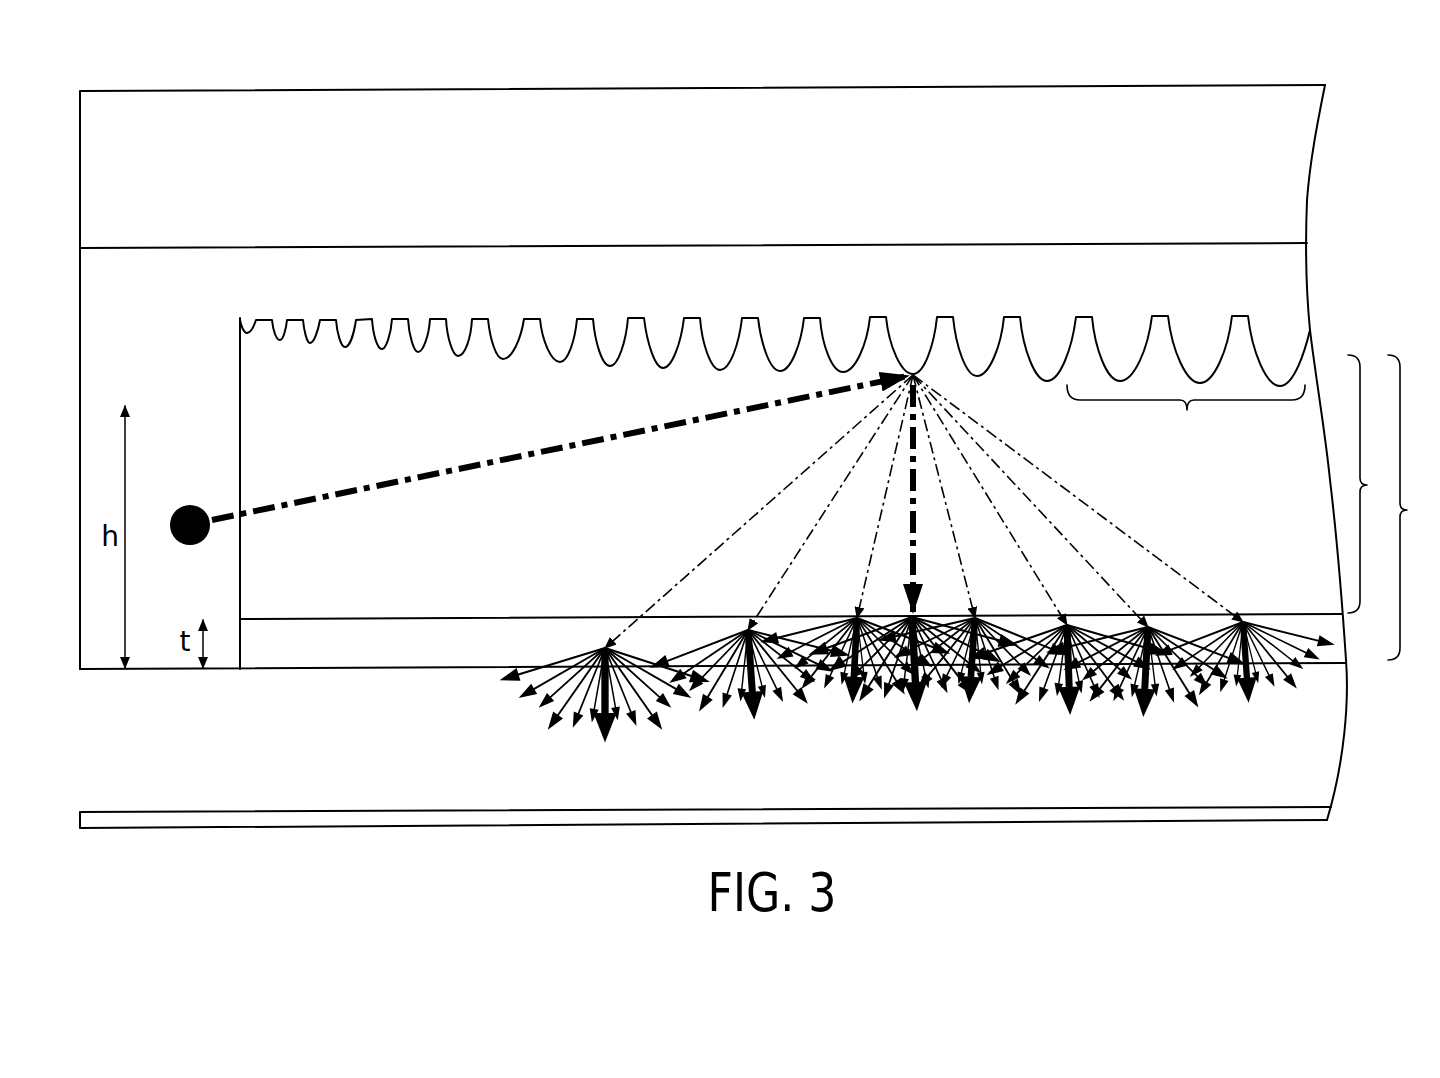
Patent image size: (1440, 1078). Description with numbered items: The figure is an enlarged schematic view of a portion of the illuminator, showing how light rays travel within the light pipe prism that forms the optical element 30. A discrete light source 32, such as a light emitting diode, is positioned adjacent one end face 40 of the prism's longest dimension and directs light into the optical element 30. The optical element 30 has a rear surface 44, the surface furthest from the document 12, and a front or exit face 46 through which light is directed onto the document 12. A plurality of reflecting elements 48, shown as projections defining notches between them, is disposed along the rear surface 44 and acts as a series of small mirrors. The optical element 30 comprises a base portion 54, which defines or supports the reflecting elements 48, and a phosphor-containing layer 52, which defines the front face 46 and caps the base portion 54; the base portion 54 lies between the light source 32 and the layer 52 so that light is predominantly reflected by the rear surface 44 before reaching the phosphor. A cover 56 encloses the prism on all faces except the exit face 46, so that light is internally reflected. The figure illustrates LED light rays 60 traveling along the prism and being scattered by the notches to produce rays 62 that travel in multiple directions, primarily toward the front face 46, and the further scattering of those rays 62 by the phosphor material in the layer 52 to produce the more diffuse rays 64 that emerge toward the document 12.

The document 12 is at (470, 815).
The optical element 30 is at (1411, 507).
The light source 32 is at (185, 504).
The end face 40 is at (240, 448).
The rear surface 44 is at (1186, 421).
The front face 46 is at (365, 670).
The reflecting elements 48 is at (562, 352).
The layer 52 is at (305, 645).
The base portion 54 is at (1371, 484).
The cover 56 is at (147, 257).
The LED light rays 60 is at (535, 462).
The rays 62 is at (1122, 524).
The rays 64 is at (833, 702).